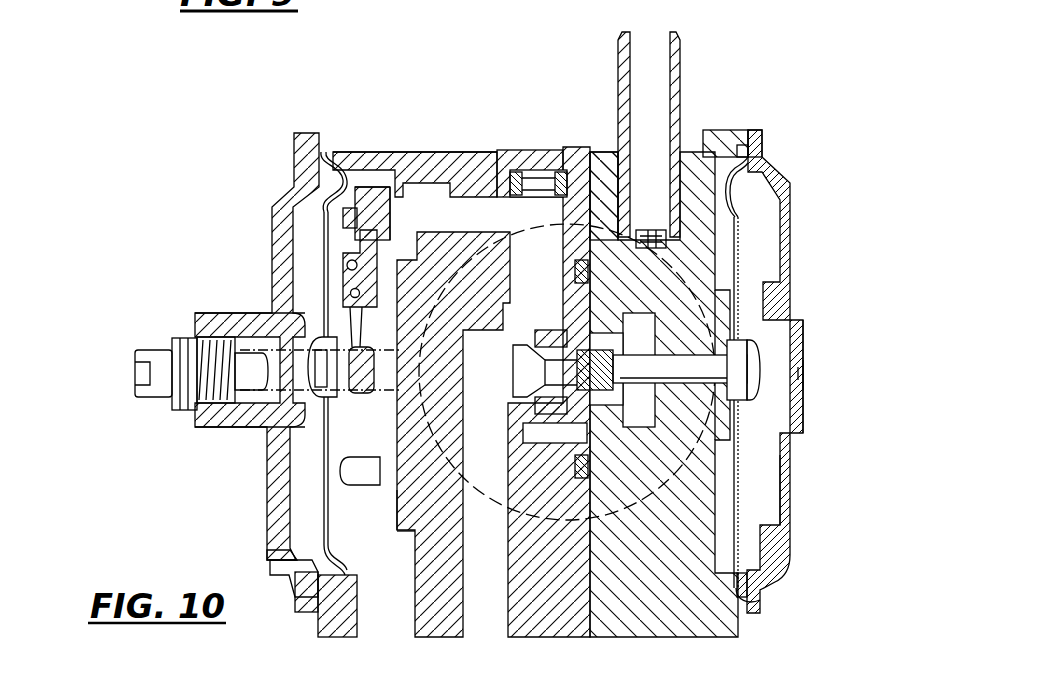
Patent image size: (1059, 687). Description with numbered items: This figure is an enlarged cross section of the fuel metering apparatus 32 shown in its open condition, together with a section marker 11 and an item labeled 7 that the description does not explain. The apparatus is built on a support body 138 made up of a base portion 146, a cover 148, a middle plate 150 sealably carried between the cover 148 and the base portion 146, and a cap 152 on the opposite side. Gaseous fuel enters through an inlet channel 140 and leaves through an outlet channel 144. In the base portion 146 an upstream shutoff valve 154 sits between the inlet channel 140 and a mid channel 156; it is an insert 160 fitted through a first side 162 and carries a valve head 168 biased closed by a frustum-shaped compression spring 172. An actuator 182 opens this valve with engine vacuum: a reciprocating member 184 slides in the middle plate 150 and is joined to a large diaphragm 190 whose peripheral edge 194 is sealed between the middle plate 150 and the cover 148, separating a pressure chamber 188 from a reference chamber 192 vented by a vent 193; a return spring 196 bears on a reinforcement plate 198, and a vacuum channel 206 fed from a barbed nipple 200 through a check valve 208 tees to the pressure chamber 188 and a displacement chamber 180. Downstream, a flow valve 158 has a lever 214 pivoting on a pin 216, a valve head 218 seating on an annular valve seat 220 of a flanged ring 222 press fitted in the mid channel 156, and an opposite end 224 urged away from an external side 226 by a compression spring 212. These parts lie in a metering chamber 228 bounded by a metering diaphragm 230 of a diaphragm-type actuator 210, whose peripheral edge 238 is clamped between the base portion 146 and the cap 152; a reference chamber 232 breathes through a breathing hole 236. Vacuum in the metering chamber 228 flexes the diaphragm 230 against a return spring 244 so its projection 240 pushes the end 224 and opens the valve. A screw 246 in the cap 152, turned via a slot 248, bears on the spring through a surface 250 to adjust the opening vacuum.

The section line 11 is at (558, 232).
The fuel metering apparatus 32 is at (170, 164).
The support body 138 is at (442, 150).
The inlet channel 140 is at (482, 615).
The outlet channel 144 is at (401, 618).
The base portion 146 is at (460, 165).
The cover 148 is at (790, 220).
The middle plate 150 is at (738, 133).
The cap 152 is at (222, 311).
The shutoff valve 154 is at (511, 378).
The mid channel 156 is at (484, 215).
The flow valve 158 is at (393, 190).
The insert 160 is at (586, 400).
The first side 162 is at (596, 167).
The valve head 168 is at (520, 365).
The compression spring 172 is at (585, 348).
The displacement chamber 180 is at (803, 378).
The actuator 182 is at (806, 392).
The reciprocating member 184 is at (685, 381).
The pressure chamber 188 is at (727, 503).
The diaphragm 190 is at (740, 250).
The reference chamber 192 is at (760, 473).
The vent 193 is at (796, 372).
The peripheral edge 194 is at (763, 150).
The compression return spring 196 is at (768, 462).
The reinforcement plate 198 is at (735, 212).
The barbed nipple 200 is at (680, 36).
The vacuum channel 206 is at (766, 300).
The check valve 208 is at (650, 230).
The diaphragm-type actuator 210 is at (250, 455).
The compression spring 212 is at (368, 391).
The lever 214 is at (350, 262).
The pin 216 is at (343, 270).
The valve head 218 is at (372, 178).
The annular valve seat 220 is at (404, 180).
The flanged ring 222 is at (425, 200).
The opposite end 224 is at (324, 445).
The external side 226 is at (397, 512).
The metering chamber 228 is at (395, 557).
The metering diaphragm 230 is at (326, 515).
The reference chamber 232 is at (300, 207).
The breathing hole 236 is at (293, 560).
The peripheral edge 238 is at (330, 598).
The projection 240 is at (343, 368).
The return spring 244 is at (270, 393).
The screw 246 is at (150, 350).
The slot 248 is at (135, 378).
The surface 250 is at (208, 340).
The stem 7 is at (366, 359).